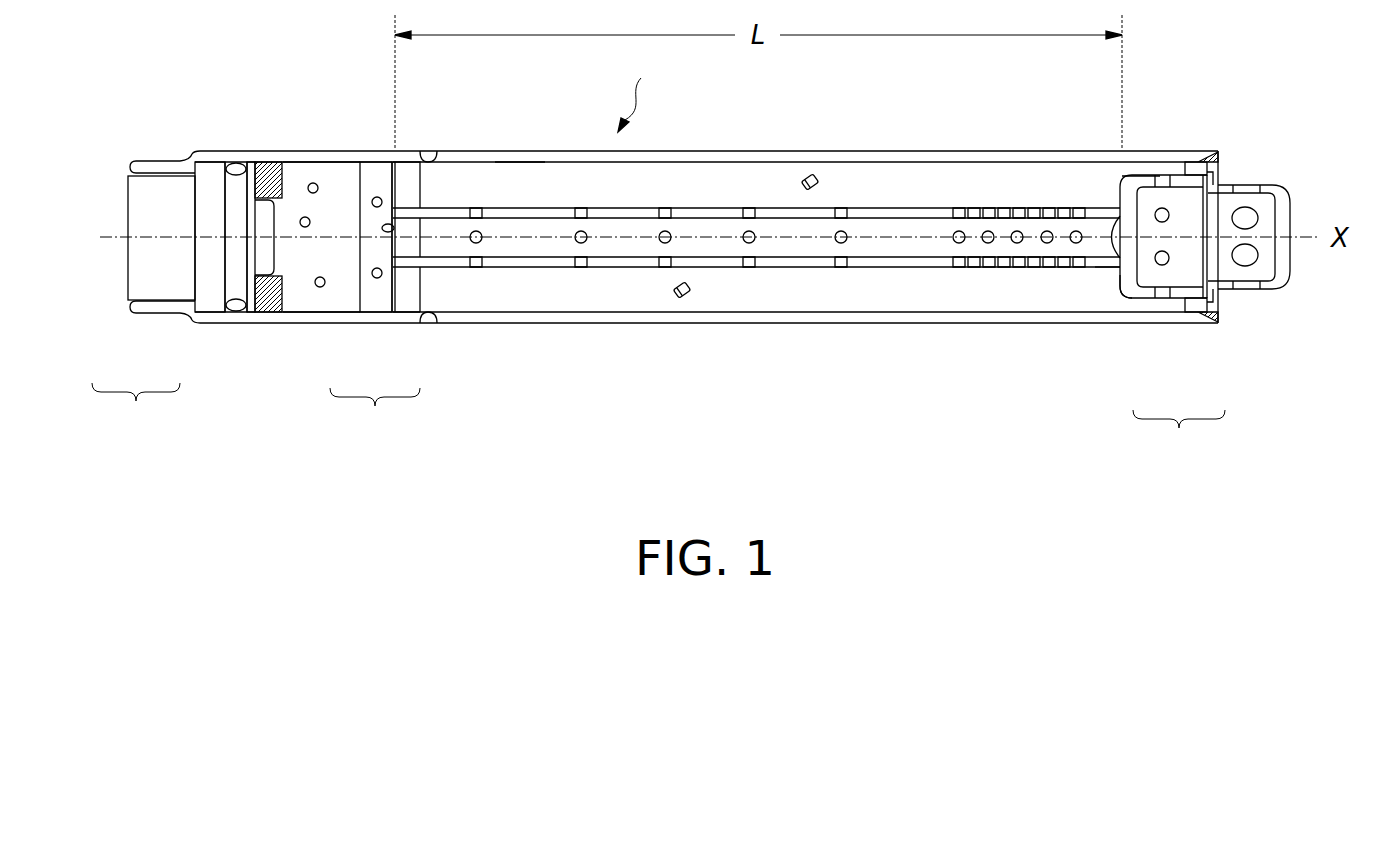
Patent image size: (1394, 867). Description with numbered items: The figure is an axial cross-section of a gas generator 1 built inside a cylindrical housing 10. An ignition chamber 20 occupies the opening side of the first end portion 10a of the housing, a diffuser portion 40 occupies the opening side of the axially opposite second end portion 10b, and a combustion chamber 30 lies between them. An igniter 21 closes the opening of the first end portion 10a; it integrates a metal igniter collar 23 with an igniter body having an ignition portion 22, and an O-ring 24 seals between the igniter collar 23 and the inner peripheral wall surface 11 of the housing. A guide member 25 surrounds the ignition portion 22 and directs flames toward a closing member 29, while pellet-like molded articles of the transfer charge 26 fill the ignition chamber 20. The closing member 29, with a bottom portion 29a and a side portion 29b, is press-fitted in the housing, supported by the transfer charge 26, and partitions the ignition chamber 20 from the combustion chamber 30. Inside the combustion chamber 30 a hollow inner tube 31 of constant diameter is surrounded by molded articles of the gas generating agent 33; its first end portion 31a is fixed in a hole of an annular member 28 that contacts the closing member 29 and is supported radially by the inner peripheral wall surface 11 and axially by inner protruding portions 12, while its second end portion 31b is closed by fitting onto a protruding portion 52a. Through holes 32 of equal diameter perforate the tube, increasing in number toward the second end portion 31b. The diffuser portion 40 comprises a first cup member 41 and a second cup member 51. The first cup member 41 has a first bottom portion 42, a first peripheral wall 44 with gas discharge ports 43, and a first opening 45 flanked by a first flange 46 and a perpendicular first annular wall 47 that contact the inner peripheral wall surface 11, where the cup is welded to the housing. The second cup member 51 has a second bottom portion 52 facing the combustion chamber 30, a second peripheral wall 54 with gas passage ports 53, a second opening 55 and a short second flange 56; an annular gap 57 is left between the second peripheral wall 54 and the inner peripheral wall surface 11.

The gas generator 1 is at (636, 93).
The cylindrical housing 10 is at (849, 151).
The first end portion 10a is at (130, 166).
The second end portion 10b is at (1218, 156).
The inner peripheral wall surface 11 is at (515, 160).
The inner protruding portions 12 is at (456, 160).
The ignition chamber 20 is at (328, 185).
The igniter 21 is at (158, 297).
The ignition portion 22 is at (262, 257).
The igniter collar 23 is at (162, 273).
The O-ring 24 is at (236, 166).
The guide member 25 is at (270, 185).
The molded article of the transfer charge 26 is at (318, 287).
The annular member 28 is at (418, 285).
The closing member 29 is at (375, 414).
The bottom portion 29a is at (393, 290).
The side portion 29b is at (372, 313).
The combustion chamber 30 is at (776, 206).
The inner tube 31 is at (899, 270).
The first end portion 31a is at (388, 230).
The second end portion 31b is at (1078, 264).
The through holes 32 is at (473, 268).
The molded article of the gas generating agent 33 is at (680, 298).
The diffuser portion 40 is at (1179, 436).
The first cup member 41 is at (1258, 292).
The first bottom portion 42 is at (1292, 216).
The gas discharge ports 43 is at (1250, 186).
The first peripheral wall 44 is at (1270, 186).
The first opening 45 is at (1262, 262).
The first flange 46 is at (1214, 157).
The first annular wall 47 is at (1213, 180).
The second cup member 51 is at (1140, 298).
The second bottom portion 52 is at (1118, 283).
The protruding portion 52a is at (1107, 228).
The gas passage ports 53 is at (1152, 173).
The second peripheral wall 54 is at (1137, 174).
The second opening 55 is at (1125, 196).
The second flange 56 is at (1192, 300).
The annular gap 57 is at (1170, 172).